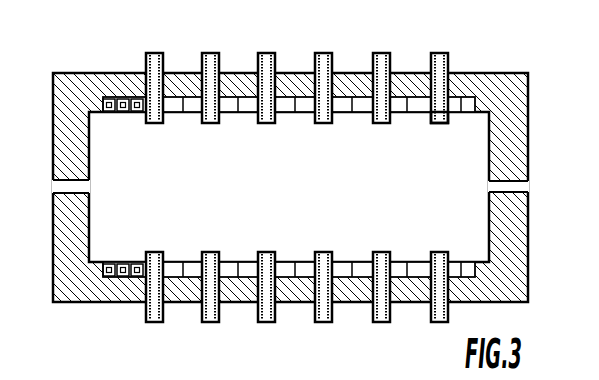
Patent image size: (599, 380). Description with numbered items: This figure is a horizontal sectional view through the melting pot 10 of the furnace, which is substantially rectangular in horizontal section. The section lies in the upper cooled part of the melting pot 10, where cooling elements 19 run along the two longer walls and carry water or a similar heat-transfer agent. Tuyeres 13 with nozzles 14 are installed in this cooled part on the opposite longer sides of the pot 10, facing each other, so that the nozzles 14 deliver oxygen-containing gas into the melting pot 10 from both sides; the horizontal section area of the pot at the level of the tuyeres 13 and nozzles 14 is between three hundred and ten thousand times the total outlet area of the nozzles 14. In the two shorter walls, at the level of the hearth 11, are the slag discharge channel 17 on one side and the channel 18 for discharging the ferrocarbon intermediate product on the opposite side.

The melting pot 10 is at (515, 277).
The hearth 11 is at (107, 237).
The tuyeres 13 is at (450, 53).
The nozzles 14 is at (435, 124).
The slag discharge channel 17 is at (85, 187).
The channel for discharge of intermediate product 18 is at (489, 188).
The cooling elements 19 is at (235, 105).